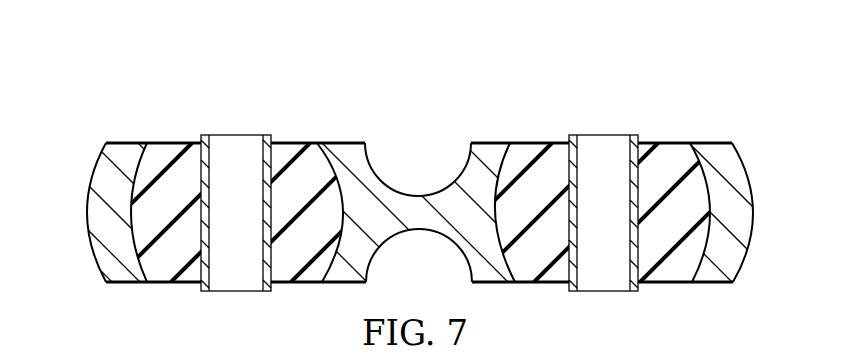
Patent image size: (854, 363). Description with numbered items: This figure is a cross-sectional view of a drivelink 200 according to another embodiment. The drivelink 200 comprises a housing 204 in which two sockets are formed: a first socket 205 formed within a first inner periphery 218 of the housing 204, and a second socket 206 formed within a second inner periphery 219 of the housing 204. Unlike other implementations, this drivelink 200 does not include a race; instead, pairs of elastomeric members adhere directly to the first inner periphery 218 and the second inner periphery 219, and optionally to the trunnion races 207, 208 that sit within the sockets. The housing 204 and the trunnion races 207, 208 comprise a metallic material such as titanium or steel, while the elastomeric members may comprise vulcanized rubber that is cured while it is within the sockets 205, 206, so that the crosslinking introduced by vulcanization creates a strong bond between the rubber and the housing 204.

The drivelink 200 is at (414, 177).
The housing 204 is at (753, 183).
The first socket 205 is at (222, 179).
The second socket 206 is at (609, 210).
The trunnion race 207 is at (235, 145).
The trunnion race 208 is at (606, 143).
The first inner periphery 218 is at (125, 192).
The second inner periphery 219 is at (493, 255).